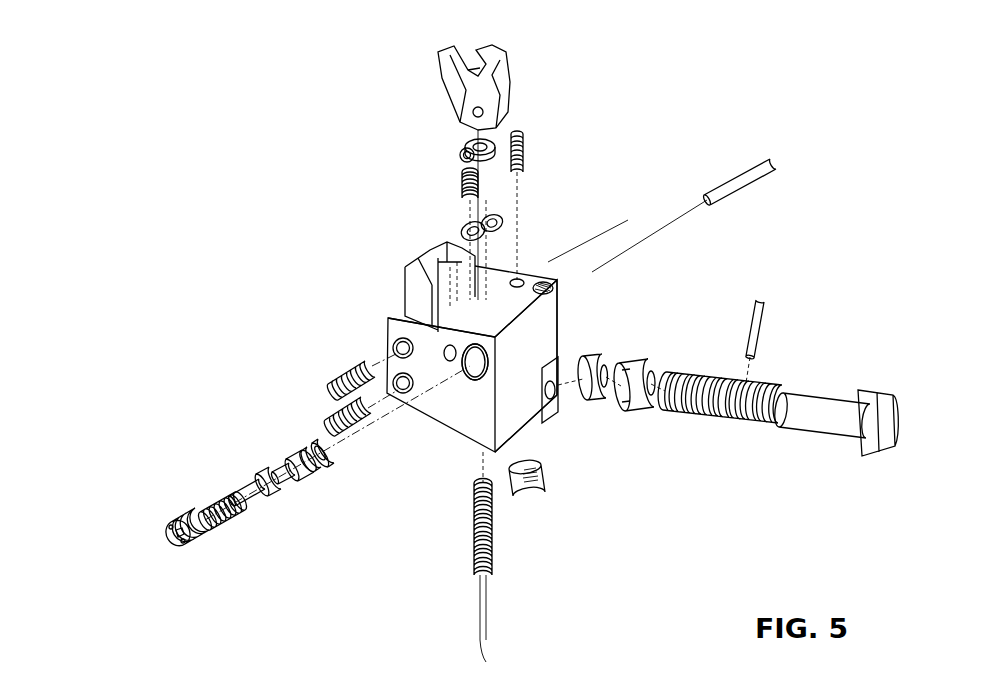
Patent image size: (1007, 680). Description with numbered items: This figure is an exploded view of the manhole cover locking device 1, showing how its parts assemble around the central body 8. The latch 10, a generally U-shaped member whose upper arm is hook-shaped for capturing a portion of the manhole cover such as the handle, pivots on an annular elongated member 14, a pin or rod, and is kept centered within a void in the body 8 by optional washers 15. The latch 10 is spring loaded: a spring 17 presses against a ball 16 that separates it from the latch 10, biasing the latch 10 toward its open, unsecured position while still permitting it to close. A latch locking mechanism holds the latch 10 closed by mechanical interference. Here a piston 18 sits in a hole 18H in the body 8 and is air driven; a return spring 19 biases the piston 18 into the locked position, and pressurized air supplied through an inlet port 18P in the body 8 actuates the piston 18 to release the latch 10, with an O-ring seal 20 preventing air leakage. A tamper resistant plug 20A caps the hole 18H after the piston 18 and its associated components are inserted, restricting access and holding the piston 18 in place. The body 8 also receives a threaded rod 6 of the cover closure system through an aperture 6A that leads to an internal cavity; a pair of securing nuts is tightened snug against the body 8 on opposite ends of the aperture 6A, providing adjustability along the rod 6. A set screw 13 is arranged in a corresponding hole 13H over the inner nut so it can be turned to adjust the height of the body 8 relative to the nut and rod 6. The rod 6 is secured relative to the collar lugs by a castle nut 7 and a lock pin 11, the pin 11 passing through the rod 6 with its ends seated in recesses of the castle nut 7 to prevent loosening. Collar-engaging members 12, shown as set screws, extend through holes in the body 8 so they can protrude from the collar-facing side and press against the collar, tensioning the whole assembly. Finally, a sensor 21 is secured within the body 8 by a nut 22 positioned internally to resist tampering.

The manhole cover locking device 1 is at (847, 114).
The rod 6 is at (812, 412).
The aperture 6A is at (550, 377).
The castle nut 7 is at (642, 375).
The body 8 is at (418, 290).
The latch 10 is at (458, 92).
The lock pin 11 is at (759, 323).
The collar-engaging members 12 is at (330, 415).
The set screw 13 is at (523, 147).
The hole 13H is at (517, 283).
The annular elongated member 14 is at (737, 185).
The washers 15 is at (495, 220).
The ball 16 is at (477, 156).
The spring 17 is at (463, 187).
The piston 18 is at (273, 470).
The hole 18H is at (472, 378).
The inlet port 18P is at (543, 288).
The spring 19 is at (213, 508).
The O-ring seal 20 is at (317, 442).
The tamper resistant plug 20A is at (175, 513).
The sensor 21 is at (490, 537).
The nut 22 is at (473, 142).